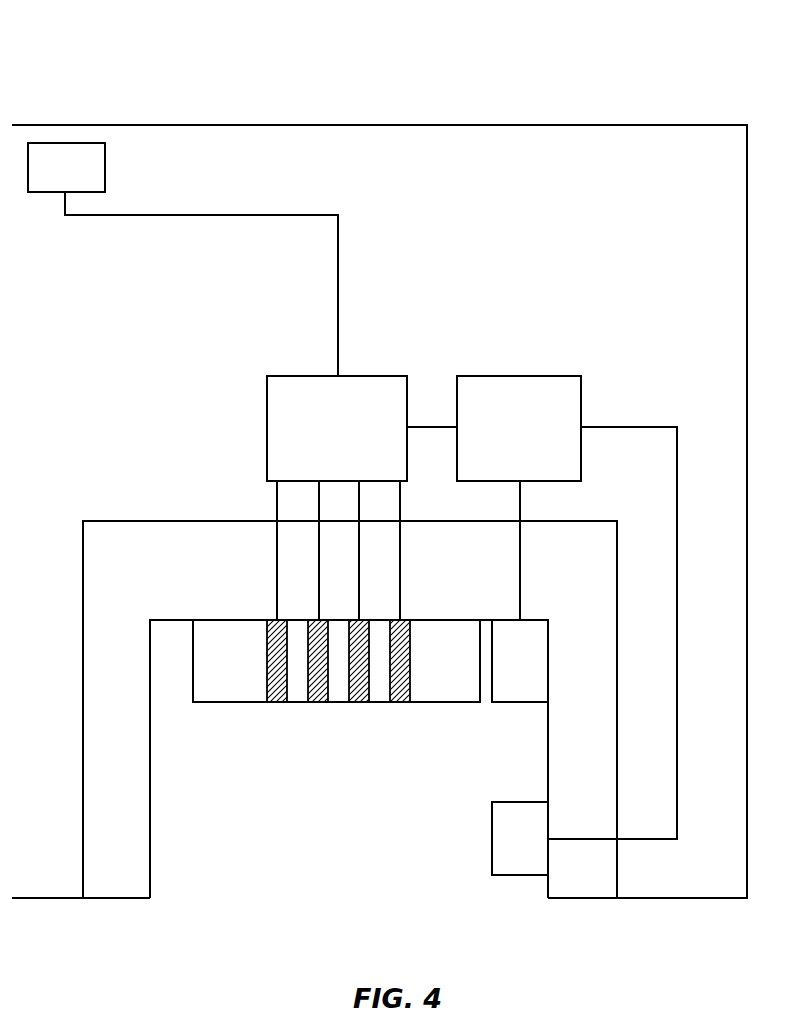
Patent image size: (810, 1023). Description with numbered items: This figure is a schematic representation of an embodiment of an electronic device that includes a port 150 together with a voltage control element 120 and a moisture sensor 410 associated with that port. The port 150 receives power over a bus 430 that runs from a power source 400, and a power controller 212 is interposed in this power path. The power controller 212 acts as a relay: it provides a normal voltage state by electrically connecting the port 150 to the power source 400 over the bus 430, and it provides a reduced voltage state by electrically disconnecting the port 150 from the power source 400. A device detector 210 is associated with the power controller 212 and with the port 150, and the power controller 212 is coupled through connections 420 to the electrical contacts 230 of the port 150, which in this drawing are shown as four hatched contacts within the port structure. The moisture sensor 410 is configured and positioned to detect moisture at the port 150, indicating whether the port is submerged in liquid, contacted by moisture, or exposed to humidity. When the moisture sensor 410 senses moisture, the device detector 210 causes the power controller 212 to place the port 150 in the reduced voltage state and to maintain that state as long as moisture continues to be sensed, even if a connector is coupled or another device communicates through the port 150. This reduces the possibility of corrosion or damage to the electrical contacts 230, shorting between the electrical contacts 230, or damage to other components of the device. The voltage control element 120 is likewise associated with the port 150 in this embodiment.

The power source 400 is at (83, 179).
The bus 430 is at (148, 215).
The power controller 212 is at (355, 444).
The device detector 210 is at (537, 444).
The control lines 420 is at (277, 557).
The port 150 is at (234, 912).
The electrical contacts 230 is at (276, 703).
The moisture sensor 410 is at (512, 683).
The voltage control element 120 is at (517, 863).